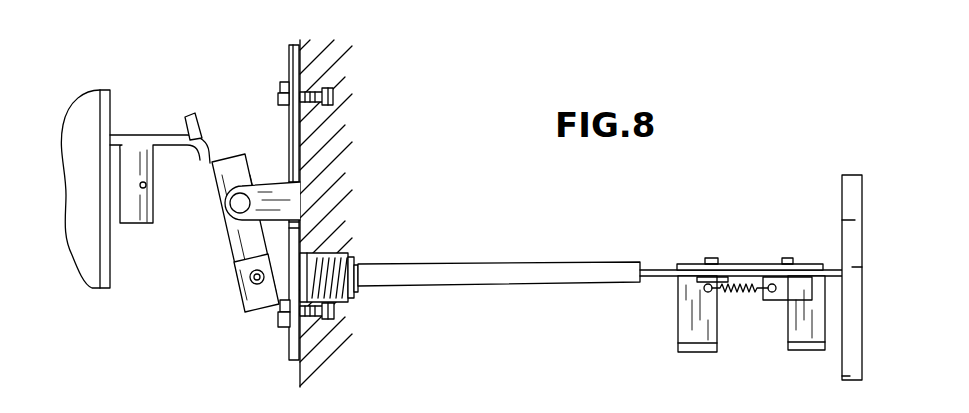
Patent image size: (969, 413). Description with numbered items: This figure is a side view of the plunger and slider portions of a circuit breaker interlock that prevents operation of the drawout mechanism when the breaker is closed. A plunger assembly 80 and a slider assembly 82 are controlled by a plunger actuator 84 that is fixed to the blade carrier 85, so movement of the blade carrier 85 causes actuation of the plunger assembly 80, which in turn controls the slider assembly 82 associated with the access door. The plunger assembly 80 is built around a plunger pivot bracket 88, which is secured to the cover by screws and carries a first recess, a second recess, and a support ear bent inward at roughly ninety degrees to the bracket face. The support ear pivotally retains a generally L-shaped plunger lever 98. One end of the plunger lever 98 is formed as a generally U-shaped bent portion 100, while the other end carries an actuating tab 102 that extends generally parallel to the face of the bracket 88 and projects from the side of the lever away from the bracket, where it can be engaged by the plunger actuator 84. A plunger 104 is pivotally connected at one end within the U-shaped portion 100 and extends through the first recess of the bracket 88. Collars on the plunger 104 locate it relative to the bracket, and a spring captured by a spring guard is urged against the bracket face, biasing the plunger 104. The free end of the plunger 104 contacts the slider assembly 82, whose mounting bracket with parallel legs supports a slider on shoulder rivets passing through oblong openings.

The plunger assembly 80 is at (364, 162).
The slider assembly 82 is at (760, 236).
The plunger actuator 84 is at (148, 133).
The blade carrier 85 is at (84, 102).
The plunger pivot bracket 88 is at (288, 60).
The plunger lever 98 is at (235, 248).
The U-shaped bent portion 100 is at (243, 312).
The actuating tab 102 is at (198, 115).
The plunger 104 is at (515, 263).